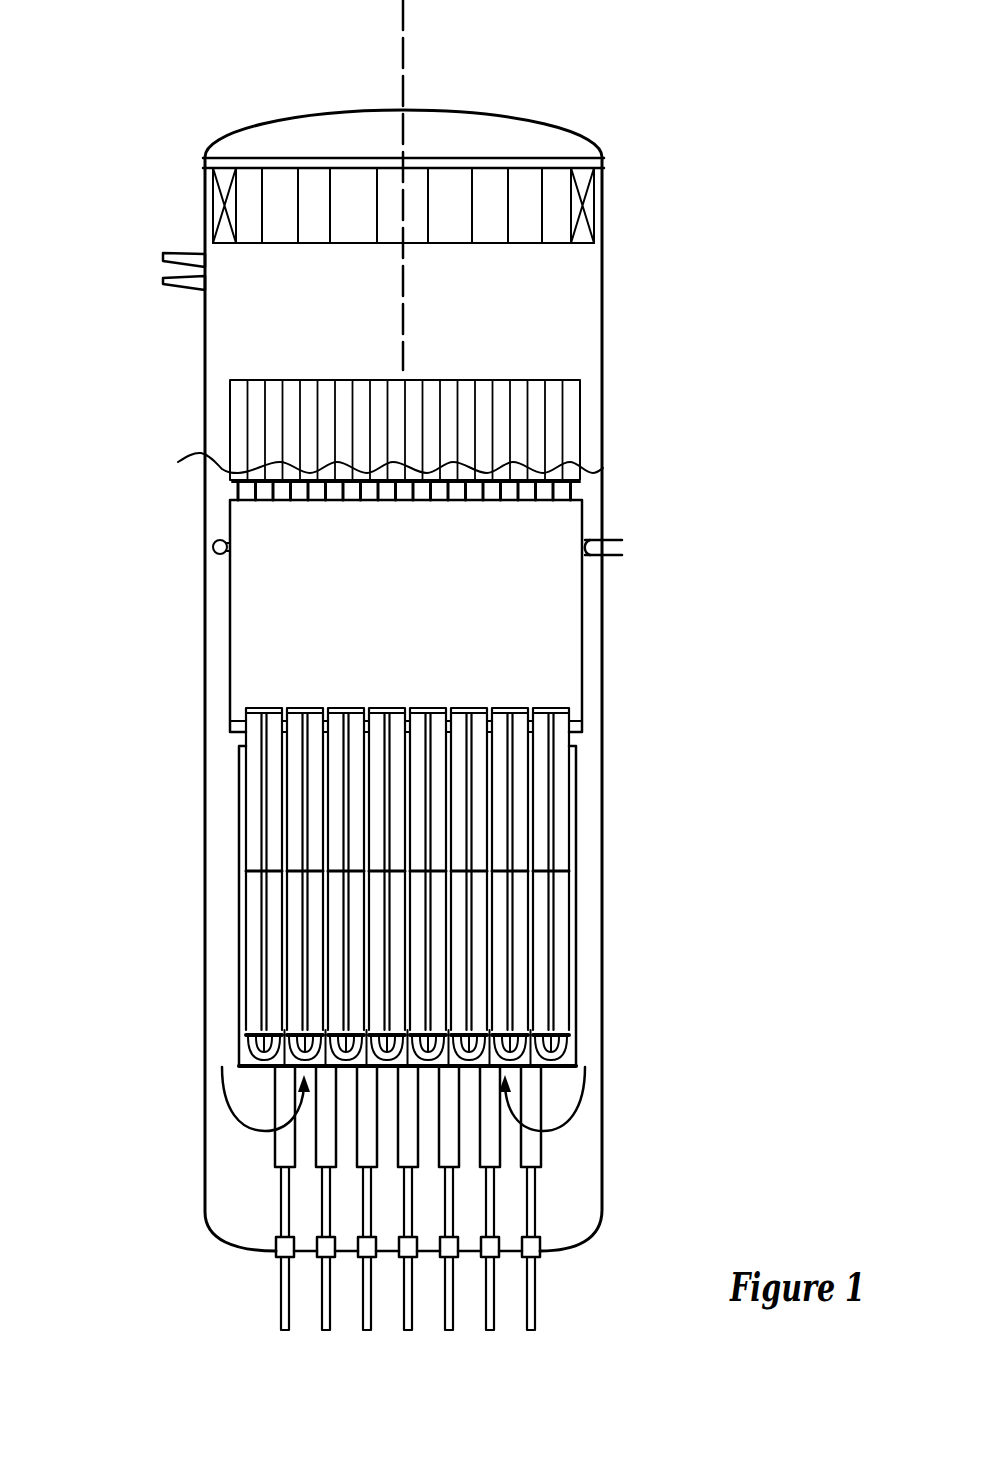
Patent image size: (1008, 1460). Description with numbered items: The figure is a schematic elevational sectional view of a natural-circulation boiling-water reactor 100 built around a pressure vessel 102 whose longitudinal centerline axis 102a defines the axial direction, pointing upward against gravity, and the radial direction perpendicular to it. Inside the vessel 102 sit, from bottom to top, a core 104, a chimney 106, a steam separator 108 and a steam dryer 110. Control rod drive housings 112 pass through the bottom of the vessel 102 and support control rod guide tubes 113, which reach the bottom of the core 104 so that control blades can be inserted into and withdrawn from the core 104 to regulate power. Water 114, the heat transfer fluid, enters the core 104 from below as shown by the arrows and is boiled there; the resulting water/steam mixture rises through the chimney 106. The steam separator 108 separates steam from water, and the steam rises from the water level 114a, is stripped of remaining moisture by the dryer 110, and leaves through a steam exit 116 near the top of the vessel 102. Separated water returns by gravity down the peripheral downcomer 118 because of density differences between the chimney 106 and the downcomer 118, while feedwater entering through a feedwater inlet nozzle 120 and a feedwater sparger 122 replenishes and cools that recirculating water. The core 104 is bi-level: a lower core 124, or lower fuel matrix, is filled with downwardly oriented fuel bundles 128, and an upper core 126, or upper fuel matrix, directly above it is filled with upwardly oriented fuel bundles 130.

The natural-circulation boiling-water reactor 100 is at (150, 110).
The pressure vessel 102 is at (604, 417).
The longitudinal centerline axis 102a is at (403, 32).
The core 104 is at (181, 716).
The chimney 106 is at (583, 593).
The steam separator 108 is at (230, 410).
The steam dryer 110 is at (583, 245).
The control rod drive housings 112 is at (541, 1168).
The control rod guide tubes 113 is at (275, 1145).
The water 114 is at (232, 1124).
The water level 114a is at (357, 465).
The steam exit 116 is at (173, 285).
The peripheral downcomer 118 is at (588, 868).
The feedwater inlet nozzle 120 is at (619, 537).
The feedwater sparger 122 is at (214, 540).
The lower core 124 is at (568, 945).
The upper core 126 is at (568, 795).
The fuel bundles 128 is at (500, 990).
The fuel bundles 130 is at (540, 716).